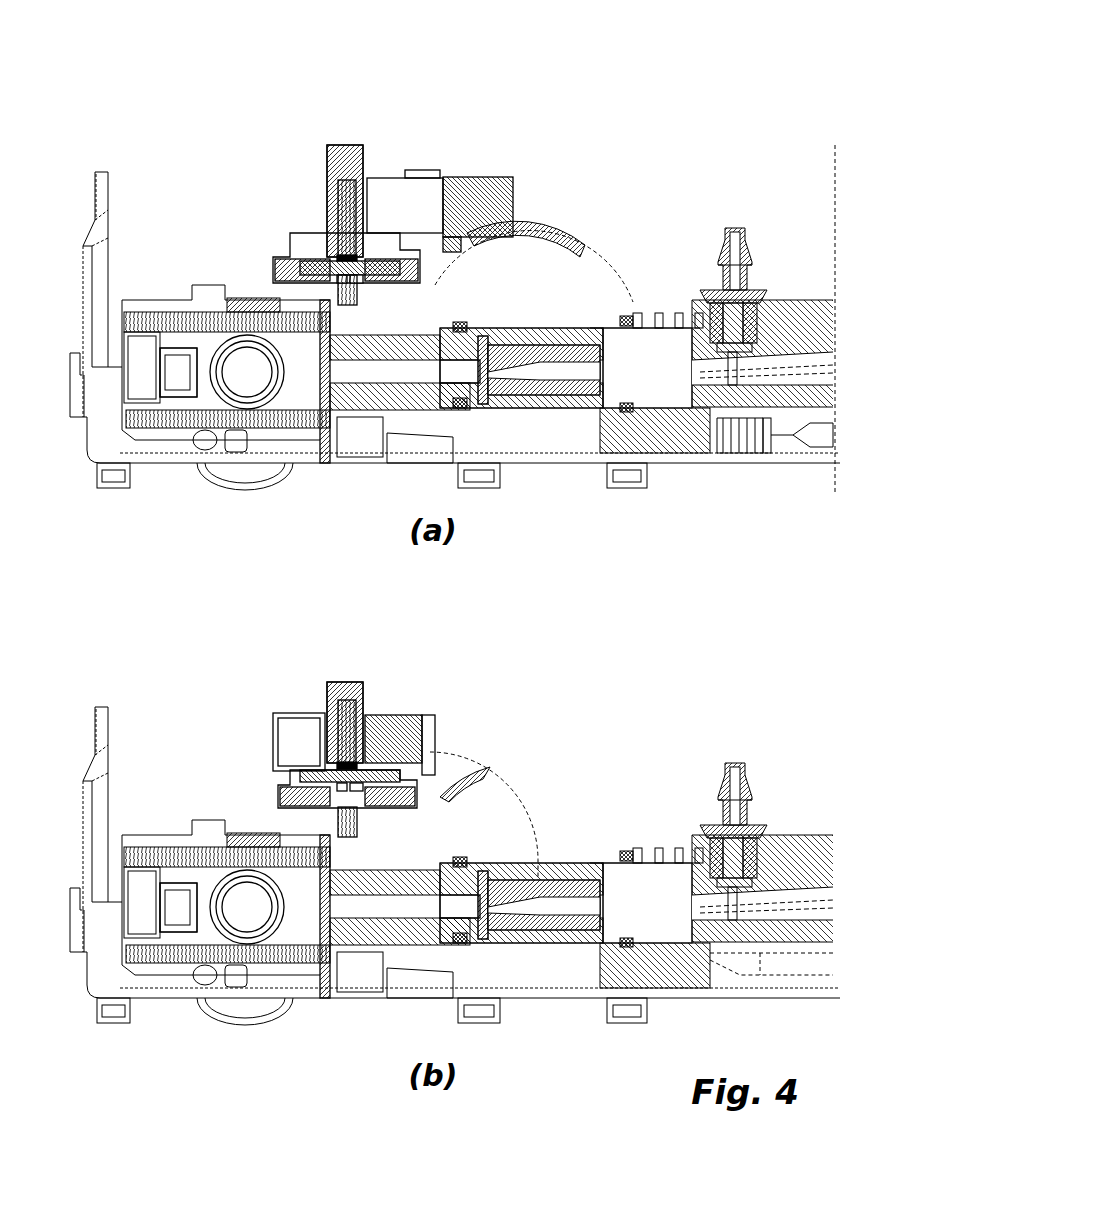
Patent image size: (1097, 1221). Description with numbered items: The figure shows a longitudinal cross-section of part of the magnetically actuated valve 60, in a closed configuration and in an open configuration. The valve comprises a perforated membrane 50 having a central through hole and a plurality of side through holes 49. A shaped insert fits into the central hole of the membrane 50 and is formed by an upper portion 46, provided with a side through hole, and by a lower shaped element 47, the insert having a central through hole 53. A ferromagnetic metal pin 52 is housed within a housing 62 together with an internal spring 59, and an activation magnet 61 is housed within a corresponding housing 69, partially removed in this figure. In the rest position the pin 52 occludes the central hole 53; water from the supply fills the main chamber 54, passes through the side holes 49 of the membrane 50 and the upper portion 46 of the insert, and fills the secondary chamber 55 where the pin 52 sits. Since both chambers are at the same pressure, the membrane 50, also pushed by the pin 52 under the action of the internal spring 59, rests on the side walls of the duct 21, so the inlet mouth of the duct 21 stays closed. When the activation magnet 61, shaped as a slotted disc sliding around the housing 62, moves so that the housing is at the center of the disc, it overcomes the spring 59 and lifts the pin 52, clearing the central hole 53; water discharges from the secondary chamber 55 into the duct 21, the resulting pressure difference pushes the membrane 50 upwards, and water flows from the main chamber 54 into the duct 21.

The duct 21 is at (357, 330).
The upper portion of the shaped insert 46 is at (323, 267).
The lower shaped element 47 is at (338, 305).
The side through holes 49 is at (320, 278).
The perforated membrane 50 is at (312, 298).
The ferromagnetic metal pin 52 is at (348, 227).
The central through hole 53 is at (347, 306).
The main chamber 54 is at (207, 347).
The secondary chamber 55 is at (377, 252).
The internal spring 59 is at (347, 185).
The magnetically actuated valve 60 is at (588, 130).
The activation magnet 61 is at (423, 197).
The housing 62 is at (347, 158).
The housing 69 is at (507, 193).